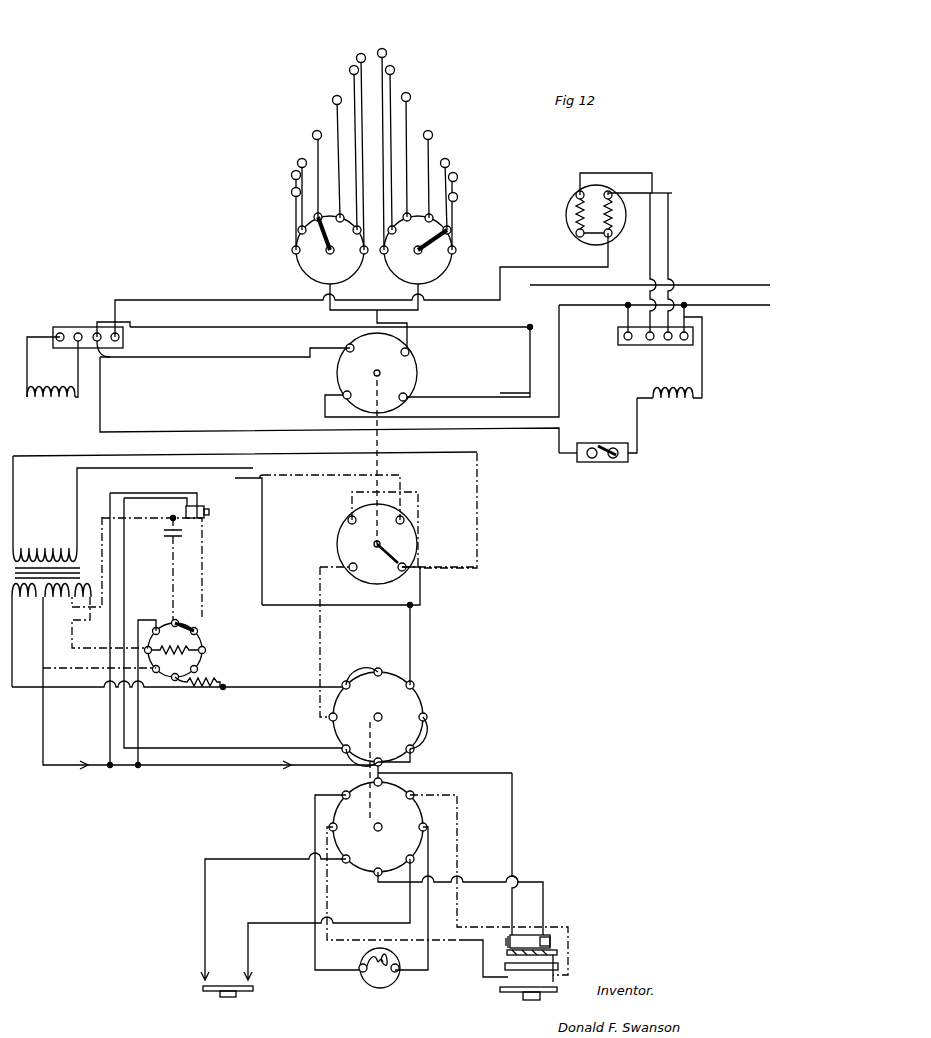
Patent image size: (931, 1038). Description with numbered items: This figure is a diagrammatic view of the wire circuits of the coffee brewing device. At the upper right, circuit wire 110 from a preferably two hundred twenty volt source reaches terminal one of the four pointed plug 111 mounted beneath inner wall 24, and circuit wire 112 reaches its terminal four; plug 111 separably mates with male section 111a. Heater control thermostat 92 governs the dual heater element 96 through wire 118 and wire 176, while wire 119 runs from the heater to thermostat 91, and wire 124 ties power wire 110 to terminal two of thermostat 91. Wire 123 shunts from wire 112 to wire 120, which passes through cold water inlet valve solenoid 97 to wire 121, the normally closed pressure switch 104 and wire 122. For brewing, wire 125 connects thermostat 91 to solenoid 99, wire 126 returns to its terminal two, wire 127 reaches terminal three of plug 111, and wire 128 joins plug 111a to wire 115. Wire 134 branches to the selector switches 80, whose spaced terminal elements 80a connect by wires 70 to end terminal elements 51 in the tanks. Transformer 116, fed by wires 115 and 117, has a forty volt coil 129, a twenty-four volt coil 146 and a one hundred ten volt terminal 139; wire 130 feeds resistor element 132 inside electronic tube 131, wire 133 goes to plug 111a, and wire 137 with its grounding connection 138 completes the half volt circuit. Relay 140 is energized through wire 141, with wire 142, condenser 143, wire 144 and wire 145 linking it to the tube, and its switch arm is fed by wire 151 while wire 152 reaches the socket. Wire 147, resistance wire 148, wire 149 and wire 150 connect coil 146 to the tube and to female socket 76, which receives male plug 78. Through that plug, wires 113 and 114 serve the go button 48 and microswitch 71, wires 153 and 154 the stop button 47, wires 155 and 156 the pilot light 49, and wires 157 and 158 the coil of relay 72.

The end terminal elements 51 is at (385, 52).
The wires 70 is at (407, 110).
The selector switches 80 is at (305, 263).
The spaced terminal elements 80a is at (296, 230).
The heater element 96 is at (592, 220).
The wire 176 is at (645, 173).
The wire 118 is at (672, 193).
The inner wall 24 is at (626, 215).
The circuit wire 110 is at (728, 262).
The wire 123 is at (610, 320).
The heater control thermostat 92 is at (693, 342).
The wire 120 is at (702, 318).
The cold water inlet valve solenoid 97 is at (672, 402).
The wire 121 is at (637, 440).
The pressure switch 104 is at (602, 462).
The circuit wire 112 is at (614, 305).
The four pointed plug 111 is at (350, 368).
The wire 134 is at (412, 335).
The male plug section 111a is at (406, 550).
The thermostat 91 is at (52, 325).
The wire 125 is at (52, 340).
The solenoid 99 is at (48, 398).
The wire 126 is at (80, 386).
The wire 119 is at (218, 298).
The wire 124 is at (228, 330).
The wire 127 is at (202, 360).
The wire 122 is at (194, 430).
The wire 133 is at (366, 468).
The transformer 116 is at (48, 547).
The circuit wire 117 is at (17, 502).
The circuit wire 115 is at (77, 512).
The transformer coil 129 is at (83, 585).
The 24 volt coil 146 is at (19, 600).
The wire 152 is at (135, 496).
The wire 151 is at (161, 498).
The circuit wire 141 is at (102, 518).
The relay 140 is at (200, 518).
The condenser 143 is at (173, 536).
The wire 142 is at (165, 532).
The wire 144 is at (170, 580).
The wire 145 is at (203, 607).
The electronic tube 131 is at (168, 620).
The circuit wire 130 is at (110, 622).
The 110 volt terminal 139 is at (82, 620).
The electrical connection 138 is at (50, 634).
The wire 137 is at (78, 668).
The resistor element 132 is at (200, 669).
The wire 147 is at (288, 692).
The resistance wire 148 is at (250, 688).
The wire 149 is at (42, 766).
The wire 150 is at (139, 720).
The female socket 76 is at (397, 708).
The wire 128 is at (428, 607).
The male plug 78 is at (360, 793).
The wire 155 is at (315, 832).
The wire 156 is at (457, 823).
The wire 158 is at (522, 820).
The wire 157 is at (545, 893).
The wire 153 is at (204, 920).
The wire 154 is at (272, 925).
The stop button 47 is at (238, 996).
The pilot light 49 is at (362, 990).
The wire 113 is at (473, 947).
The wire 114 is at (570, 932).
The relay 72 is at (557, 950).
The microswitch 71 is at (508, 977).
The go button 48 is at (530, 1000).